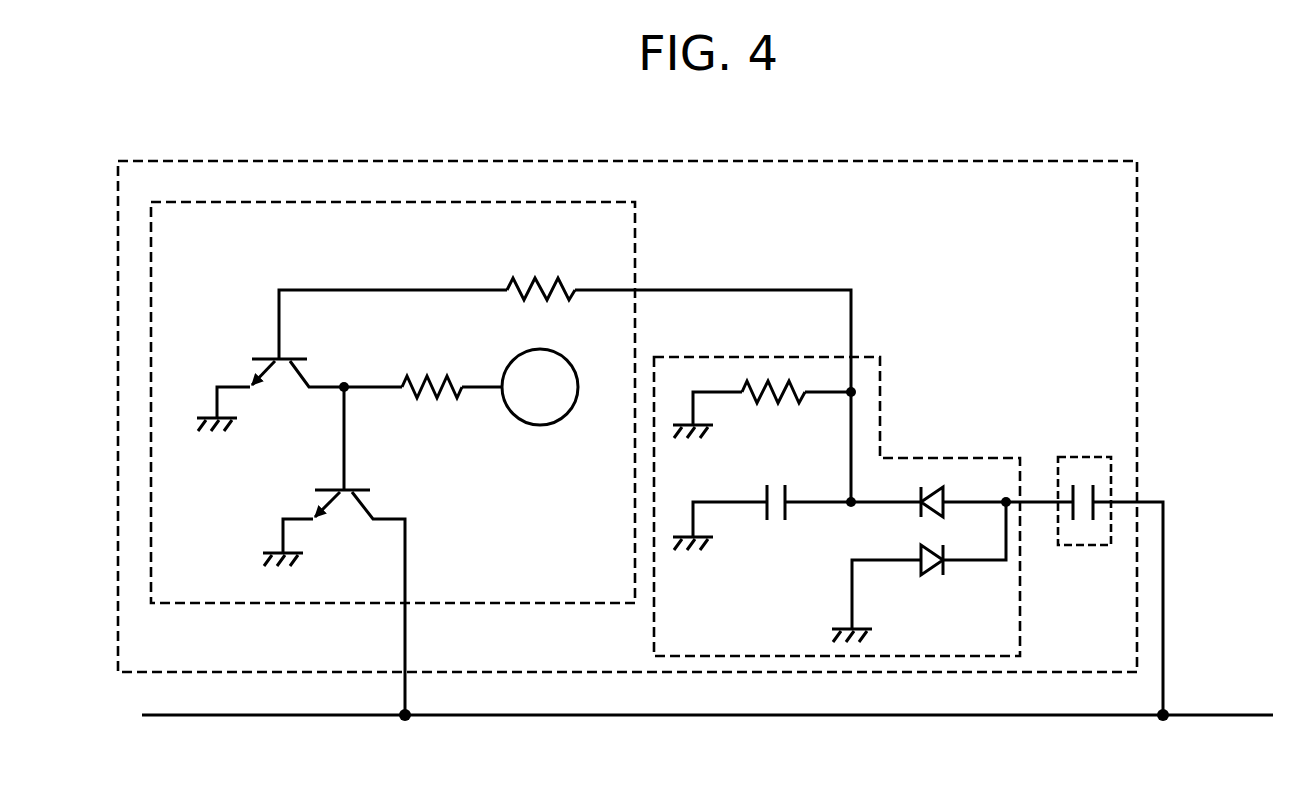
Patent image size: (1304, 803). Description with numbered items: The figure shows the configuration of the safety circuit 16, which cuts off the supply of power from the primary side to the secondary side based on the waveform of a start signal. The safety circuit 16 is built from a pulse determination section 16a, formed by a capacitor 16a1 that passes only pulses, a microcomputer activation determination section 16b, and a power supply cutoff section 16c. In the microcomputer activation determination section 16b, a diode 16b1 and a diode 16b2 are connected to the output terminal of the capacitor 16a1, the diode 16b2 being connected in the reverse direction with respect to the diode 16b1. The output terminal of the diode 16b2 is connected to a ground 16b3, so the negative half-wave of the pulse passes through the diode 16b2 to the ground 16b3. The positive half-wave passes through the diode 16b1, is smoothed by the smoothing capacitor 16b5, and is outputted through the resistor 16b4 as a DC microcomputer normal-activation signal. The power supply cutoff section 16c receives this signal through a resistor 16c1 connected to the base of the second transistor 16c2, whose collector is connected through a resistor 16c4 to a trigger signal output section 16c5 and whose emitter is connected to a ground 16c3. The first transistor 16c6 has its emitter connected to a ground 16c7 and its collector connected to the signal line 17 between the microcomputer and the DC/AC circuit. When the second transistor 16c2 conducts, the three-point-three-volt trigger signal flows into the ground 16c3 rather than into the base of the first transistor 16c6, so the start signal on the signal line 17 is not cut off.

The safety circuit 16 is at (1055, 150).
The pulse determination section 16a is at (1070, 457).
The capacitor 16a1 is at (1095, 485).
The microcomputer activation determination section 16b is at (868, 350).
The diode 16b1 is at (932, 488).
The diode 16b2 is at (930, 572).
The ground 16b3 is at (853, 645).
The resistor 16b4 is at (790, 403).
The smoothing capacitor 16b5 is at (778, 532).
The power supply cutoff section 16c is at (403, 197).
The resistor 16c1 is at (530, 276).
The second transistor 16c2 is at (268, 358).
The ground 16c3 is at (204, 418).
The resistor 16c4 is at (435, 375).
The trigger signal output section 16c5 is at (546, 350).
The first transistor 16c6 is at (360, 490).
The ground 16c7 is at (268, 553).
The signal line 17 is at (753, 717).